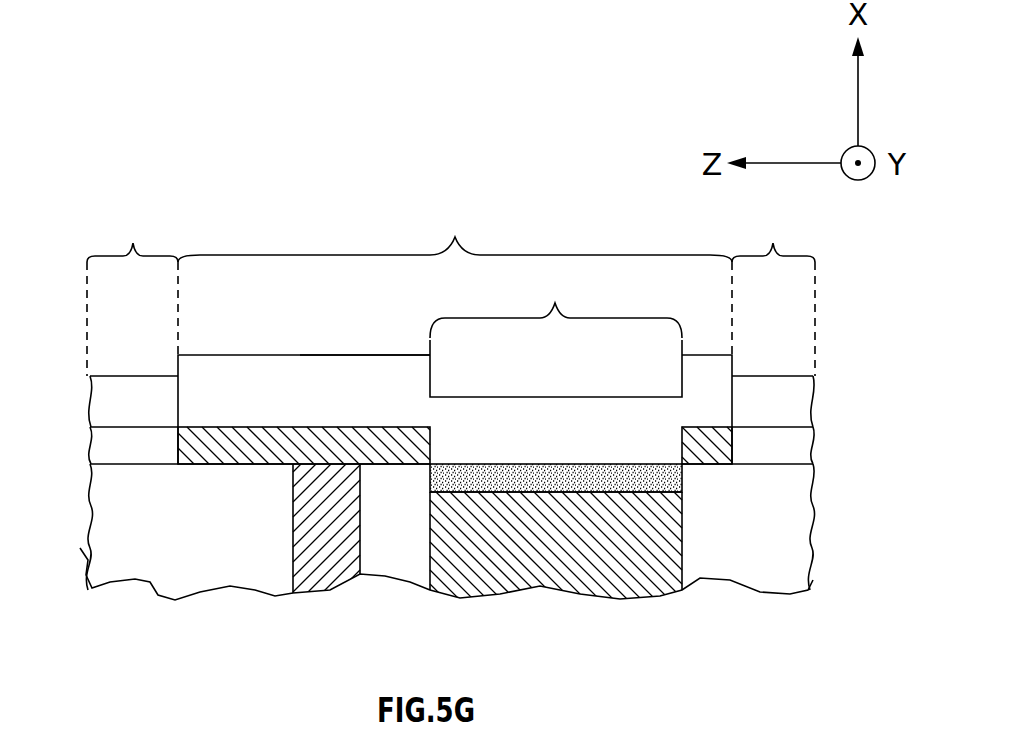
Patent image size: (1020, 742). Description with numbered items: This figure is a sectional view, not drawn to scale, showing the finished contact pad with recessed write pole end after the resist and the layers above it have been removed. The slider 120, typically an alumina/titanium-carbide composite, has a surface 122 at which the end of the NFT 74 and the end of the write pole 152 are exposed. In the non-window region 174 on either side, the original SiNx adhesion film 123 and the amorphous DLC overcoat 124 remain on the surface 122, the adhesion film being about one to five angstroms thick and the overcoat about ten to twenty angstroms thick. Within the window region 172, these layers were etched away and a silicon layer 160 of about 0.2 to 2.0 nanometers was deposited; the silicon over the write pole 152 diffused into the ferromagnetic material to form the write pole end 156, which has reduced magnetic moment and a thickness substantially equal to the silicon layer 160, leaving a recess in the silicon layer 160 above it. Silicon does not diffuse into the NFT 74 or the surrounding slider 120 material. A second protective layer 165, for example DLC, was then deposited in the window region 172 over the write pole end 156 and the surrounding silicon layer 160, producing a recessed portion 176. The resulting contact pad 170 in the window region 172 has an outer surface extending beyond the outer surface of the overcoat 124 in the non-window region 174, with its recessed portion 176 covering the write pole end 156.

The NFT 74 is at (320, 575).
The slider 120 is at (805, 548).
The surface 122 is at (815, 466).
The SiNx adhesion film 123 is at (103, 455).
The DLC overcoat 124 is at (103, 402).
The write pole 152 is at (598, 568).
The write pole end 156 is at (593, 478).
The silicon layer 160 is at (285, 432).
The second protective layer 165 is at (340, 370).
The contact pad 170 is at (267, 355).
The window region 172 is at (455, 231).
The non-window region 174 is at (451, 289).
The recessed portion 176 is at (556, 331).